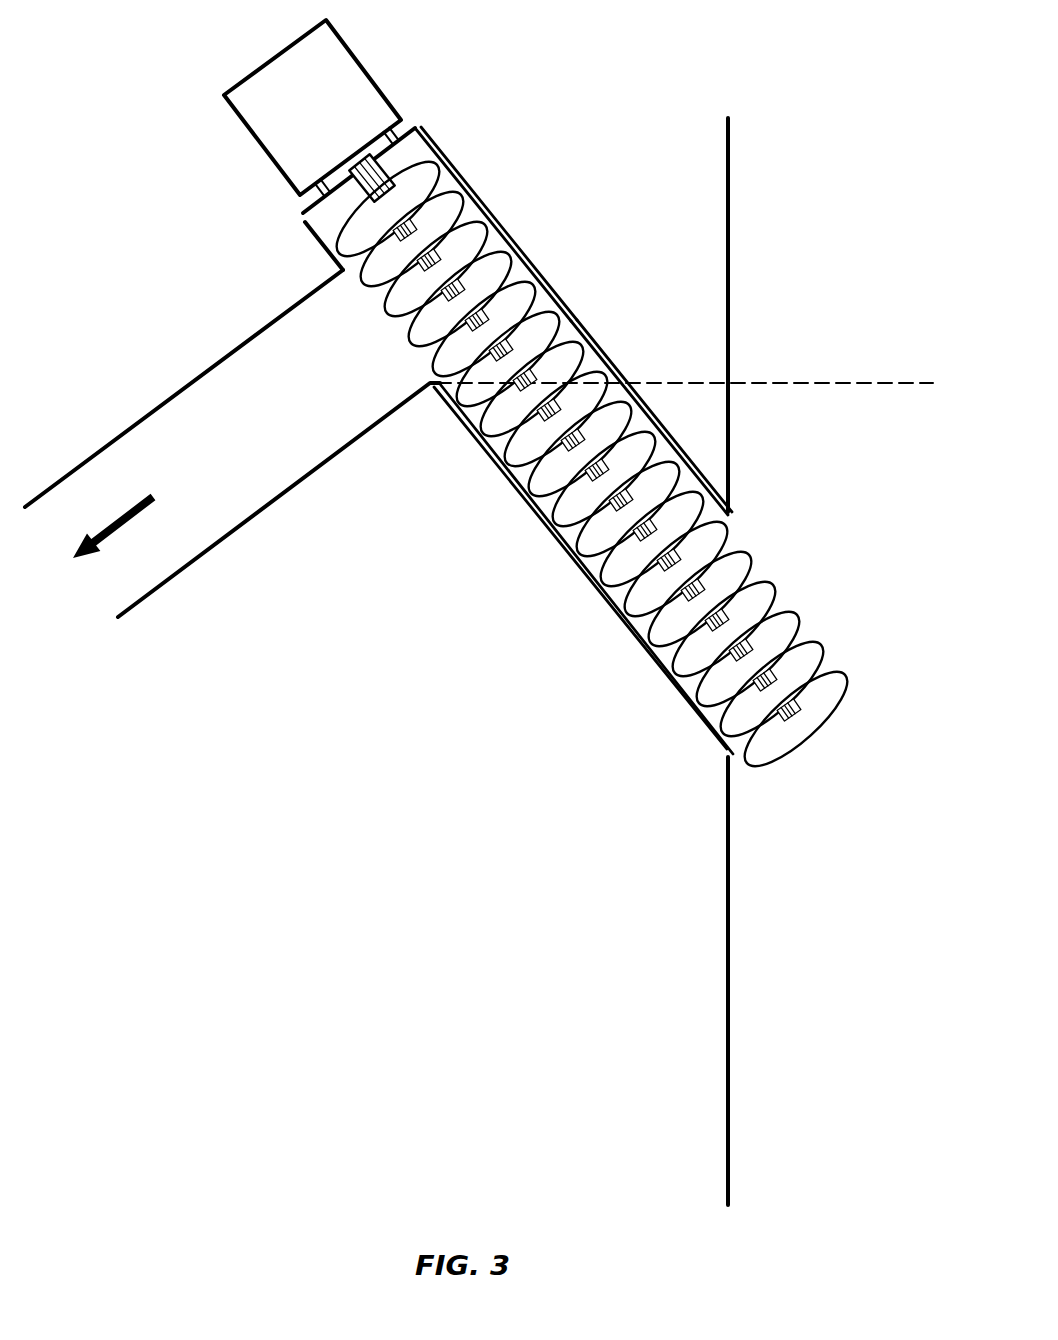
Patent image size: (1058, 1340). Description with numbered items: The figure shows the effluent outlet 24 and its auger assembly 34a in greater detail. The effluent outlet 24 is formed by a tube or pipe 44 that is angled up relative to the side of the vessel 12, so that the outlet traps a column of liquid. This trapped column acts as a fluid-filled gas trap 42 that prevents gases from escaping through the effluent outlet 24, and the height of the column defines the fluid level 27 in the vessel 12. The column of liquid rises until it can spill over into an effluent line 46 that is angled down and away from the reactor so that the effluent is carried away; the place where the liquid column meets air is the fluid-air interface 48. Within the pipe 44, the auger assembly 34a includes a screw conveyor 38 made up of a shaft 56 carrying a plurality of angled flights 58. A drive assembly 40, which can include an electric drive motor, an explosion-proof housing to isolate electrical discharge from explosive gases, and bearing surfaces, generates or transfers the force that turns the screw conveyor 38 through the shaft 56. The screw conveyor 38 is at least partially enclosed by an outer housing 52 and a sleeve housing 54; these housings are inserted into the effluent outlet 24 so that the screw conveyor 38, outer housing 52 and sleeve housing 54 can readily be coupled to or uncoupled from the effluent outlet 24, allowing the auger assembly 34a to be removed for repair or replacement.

The vessel 12 is at (727, 160).
The effluent outlet 24 is at (150, 104).
The fluid level 27 is at (805, 383).
The auger assembly 34a is at (535, 270).
The screw conveyor 38 is at (370, 298).
The drive assembly 40 is at (326, 122).
The fluid-filled gas trap 42 is at (516, 614).
The pipe 44 is at (661, 420).
The effluent line 46 is at (210, 362).
The fluid-air interface 48 is at (478, 447).
The outer housing 52 is at (596, 340).
The sleeve housing 54 is at (503, 228).
The shaft 56 is at (433, 180).
The angled flights 58 is at (438, 148).